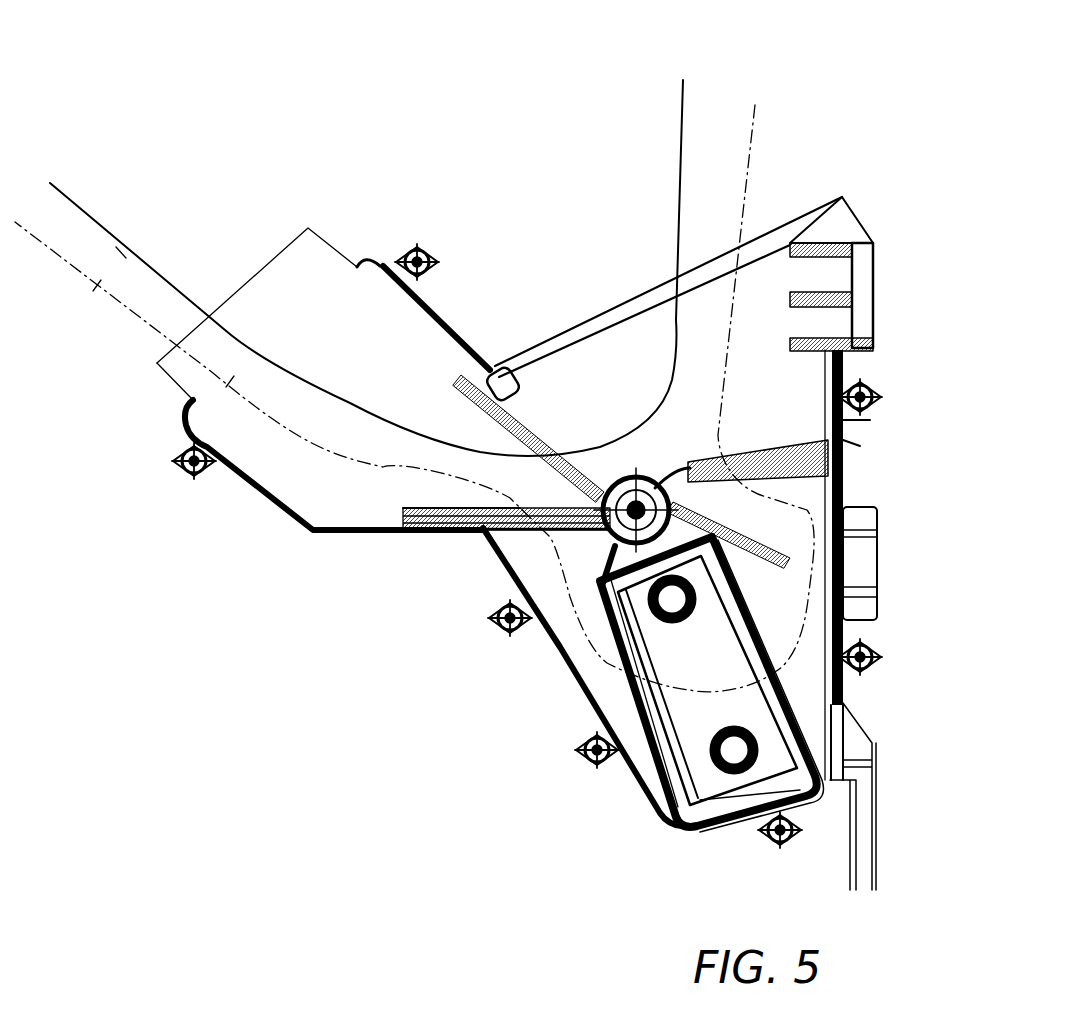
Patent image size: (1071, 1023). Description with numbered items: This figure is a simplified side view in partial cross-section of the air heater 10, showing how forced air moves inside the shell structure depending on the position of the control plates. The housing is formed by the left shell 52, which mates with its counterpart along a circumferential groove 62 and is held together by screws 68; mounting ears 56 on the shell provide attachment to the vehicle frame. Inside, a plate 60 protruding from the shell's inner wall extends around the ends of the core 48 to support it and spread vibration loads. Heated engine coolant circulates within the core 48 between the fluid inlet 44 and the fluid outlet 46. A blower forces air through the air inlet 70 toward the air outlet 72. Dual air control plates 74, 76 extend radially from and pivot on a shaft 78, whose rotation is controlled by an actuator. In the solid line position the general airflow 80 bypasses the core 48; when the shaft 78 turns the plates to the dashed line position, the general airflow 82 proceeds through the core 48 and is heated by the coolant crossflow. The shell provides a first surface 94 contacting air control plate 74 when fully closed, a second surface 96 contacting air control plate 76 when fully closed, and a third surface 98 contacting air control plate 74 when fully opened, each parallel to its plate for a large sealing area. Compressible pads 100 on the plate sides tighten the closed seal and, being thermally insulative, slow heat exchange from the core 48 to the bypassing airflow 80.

The air heater 10 is at (468, 120).
The fluid inlet 44 is at (645, 590).
The fluid outlet 46 is at (717, 768).
The core 48 is at (640, 790).
The left shell 52 is at (367, 293).
The mounting ears 56 is at (860, 292).
The plate 60 is at (793, 715).
The circumferential groove 62 is at (365, 540).
The screws 68 is at (186, 472).
The air inlet 70 is at (773, 230).
The air outlet 72 is at (260, 270).
The air control plate 74 is at (413, 540).
The air control plate 76 is at (845, 478).
The shaft 78 is at (560, 650).
The general airflow 80 is at (121, 253).
The general airflow 82 is at (94, 287).
The first surface 94 is at (430, 535).
The second surface 96 is at (852, 445).
The third surface 98 is at (506, 372).
The compressible pads 100 is at (728, 460).